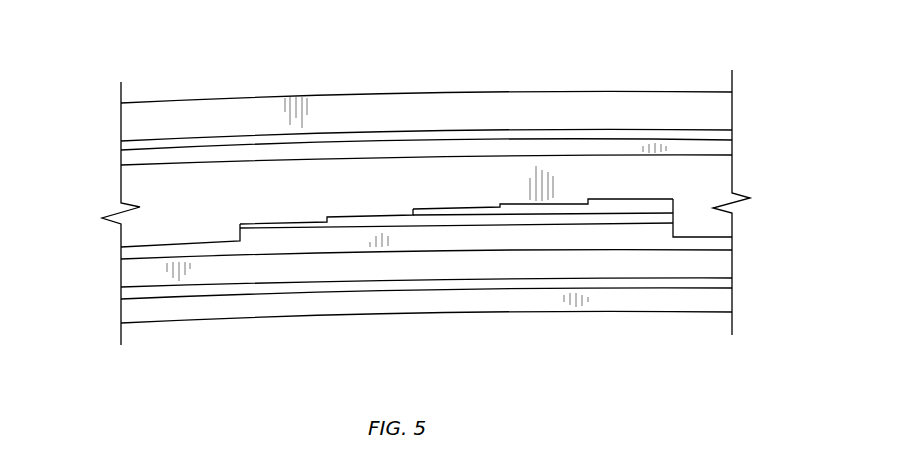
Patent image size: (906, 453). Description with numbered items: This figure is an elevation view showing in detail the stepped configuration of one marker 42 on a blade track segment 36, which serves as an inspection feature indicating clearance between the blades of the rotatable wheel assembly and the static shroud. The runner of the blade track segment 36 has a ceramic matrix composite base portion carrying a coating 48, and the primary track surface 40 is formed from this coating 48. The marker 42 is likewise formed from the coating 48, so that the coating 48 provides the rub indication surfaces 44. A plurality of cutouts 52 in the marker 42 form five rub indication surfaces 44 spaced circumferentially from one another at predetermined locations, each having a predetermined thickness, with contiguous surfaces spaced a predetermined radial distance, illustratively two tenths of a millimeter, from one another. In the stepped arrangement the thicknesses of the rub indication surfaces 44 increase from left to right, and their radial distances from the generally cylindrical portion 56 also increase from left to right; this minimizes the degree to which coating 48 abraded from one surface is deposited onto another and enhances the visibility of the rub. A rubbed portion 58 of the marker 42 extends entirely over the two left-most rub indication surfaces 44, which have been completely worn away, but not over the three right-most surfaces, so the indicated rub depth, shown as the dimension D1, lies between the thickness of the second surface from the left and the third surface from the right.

The blade track segment 36 is at (642, 70).
The coating 48 is at (152, 180).
The primary track surface 40 is at (200, 188).
The generally cylindrical portion 56 is at (171, 234).
The cutouts 52 is at (370, 203).
The rub indication surfaces 44 is at (352, 220).
The rubbed portion 58 is at (454, 199).
The marker 42 is at (509, 187).
The distance D1 is at (486, 177).